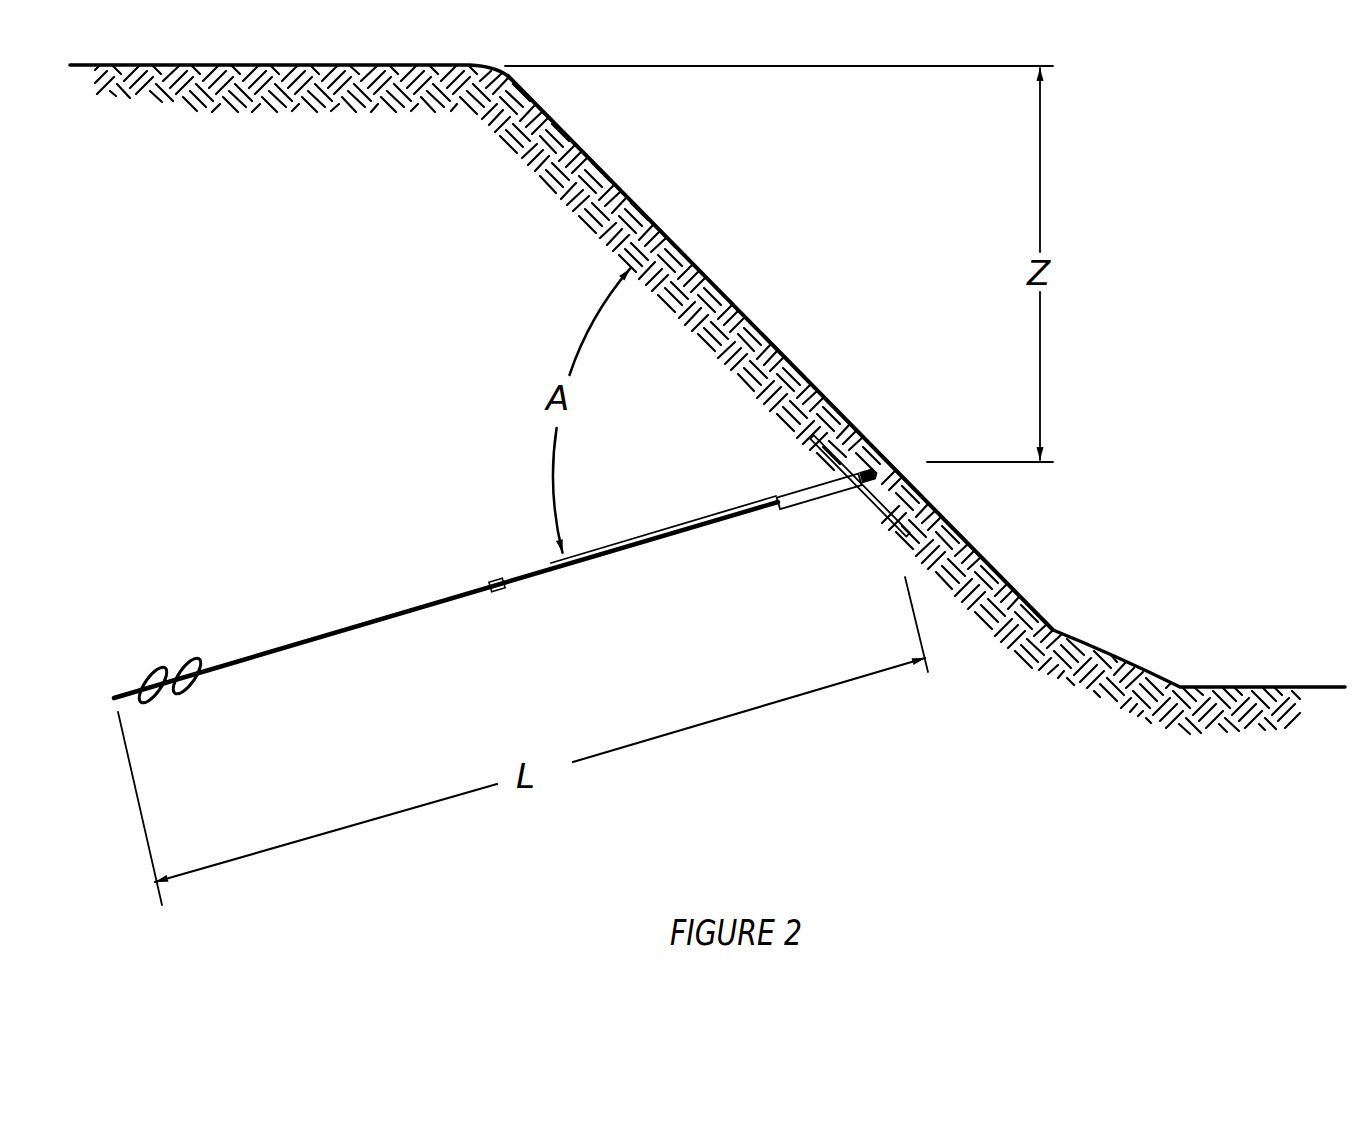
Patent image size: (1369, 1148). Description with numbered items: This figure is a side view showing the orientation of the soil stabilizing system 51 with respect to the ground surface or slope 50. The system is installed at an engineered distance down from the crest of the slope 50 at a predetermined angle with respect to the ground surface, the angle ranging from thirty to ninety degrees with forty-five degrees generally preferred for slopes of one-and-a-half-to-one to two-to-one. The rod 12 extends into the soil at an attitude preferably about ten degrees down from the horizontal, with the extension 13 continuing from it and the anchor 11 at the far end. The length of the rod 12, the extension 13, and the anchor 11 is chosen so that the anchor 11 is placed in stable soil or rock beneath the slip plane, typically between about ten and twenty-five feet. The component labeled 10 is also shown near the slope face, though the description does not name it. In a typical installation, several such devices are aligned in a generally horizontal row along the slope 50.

The anchor plate 10 is at (870, 502).
The anchor 11 is at (153, 670).
The rod 12 is at (370, 632).
The extension 13 is at (593, 565).
The ground surface or slope 50 is at (1080, 638).
The soil stabilizing system 51 is at (323, 405).